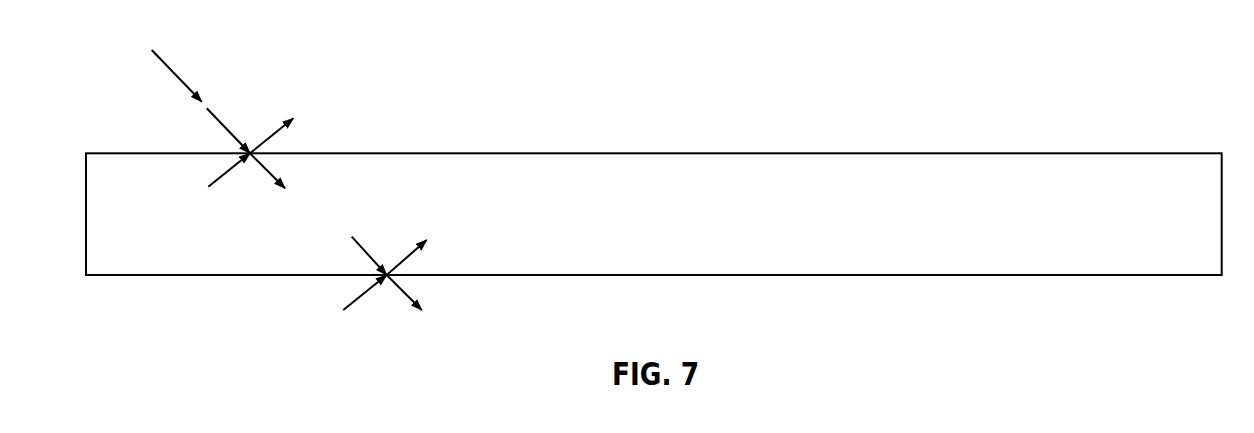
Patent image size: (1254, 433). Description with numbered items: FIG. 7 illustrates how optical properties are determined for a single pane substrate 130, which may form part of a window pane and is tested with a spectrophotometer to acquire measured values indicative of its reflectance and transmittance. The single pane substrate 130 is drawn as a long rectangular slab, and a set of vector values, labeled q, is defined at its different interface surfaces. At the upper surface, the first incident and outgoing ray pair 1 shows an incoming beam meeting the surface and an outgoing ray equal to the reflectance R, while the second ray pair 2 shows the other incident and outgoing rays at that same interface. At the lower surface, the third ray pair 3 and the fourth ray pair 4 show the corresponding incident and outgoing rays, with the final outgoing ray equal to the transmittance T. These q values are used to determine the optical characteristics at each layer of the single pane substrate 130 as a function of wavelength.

The single pane substrate 130 is at (943, 276).
The first incident/reflected ray pair (q_i,1 / q_o,1 = R) 1 is at (277, 123).
The second ray pair at top interface (q_i,2 / q_o,2) 2 is at (262, 187).
The third ray pair at bottom interface (q_i,3 / q_o,3) 3 is at (392, 242).
The fourth incident/transmitted ray pair (q_i,4 / q_o,4 = T) 4 is at (414, 310).